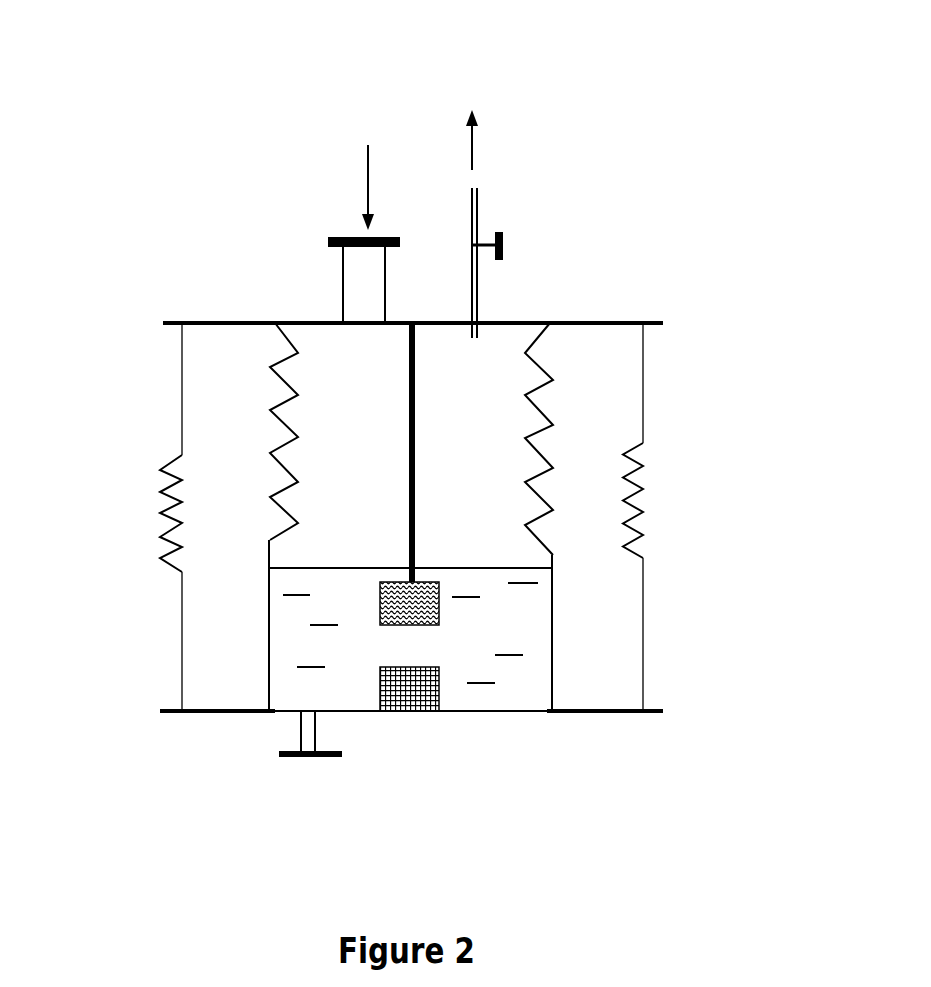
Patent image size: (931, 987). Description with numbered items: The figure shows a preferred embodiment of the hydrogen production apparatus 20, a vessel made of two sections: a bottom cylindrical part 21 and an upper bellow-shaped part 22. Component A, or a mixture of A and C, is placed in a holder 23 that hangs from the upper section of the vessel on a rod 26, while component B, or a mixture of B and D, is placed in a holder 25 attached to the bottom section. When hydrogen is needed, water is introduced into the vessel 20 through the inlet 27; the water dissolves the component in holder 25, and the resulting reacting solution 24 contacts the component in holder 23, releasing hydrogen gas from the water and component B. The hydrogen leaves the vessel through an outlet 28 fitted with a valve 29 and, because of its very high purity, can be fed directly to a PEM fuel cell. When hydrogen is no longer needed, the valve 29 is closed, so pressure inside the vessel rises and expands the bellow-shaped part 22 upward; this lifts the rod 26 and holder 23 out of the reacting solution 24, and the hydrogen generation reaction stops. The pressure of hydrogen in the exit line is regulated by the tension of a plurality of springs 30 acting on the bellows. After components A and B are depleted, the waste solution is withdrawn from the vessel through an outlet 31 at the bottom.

The apparatus 20 is at (492, 432).
The bottom cylindrical part 21 is at (550, 665).
The upper bellow-shaped part 22 is at (555, 468).
The holder 23 is at (390, 580).
The reacting solution 24 is at (520, 630).
The holder 25 is at (380, 675).
The rod 26 is at (407, 488).
The inlet 27 is at (337, 283).
The outlet 28 is at (473, 308).
The valve 29 is at (505, 235).
The springs 30 is at (633, 515).
The outlet 31 is at (297, 753).